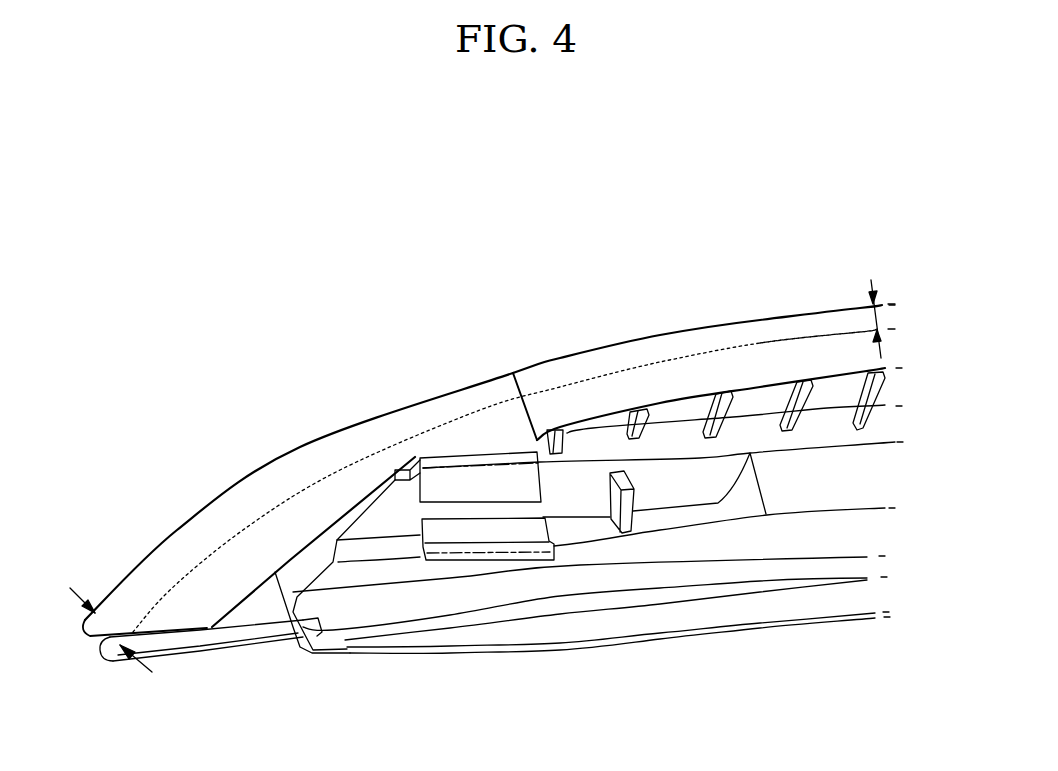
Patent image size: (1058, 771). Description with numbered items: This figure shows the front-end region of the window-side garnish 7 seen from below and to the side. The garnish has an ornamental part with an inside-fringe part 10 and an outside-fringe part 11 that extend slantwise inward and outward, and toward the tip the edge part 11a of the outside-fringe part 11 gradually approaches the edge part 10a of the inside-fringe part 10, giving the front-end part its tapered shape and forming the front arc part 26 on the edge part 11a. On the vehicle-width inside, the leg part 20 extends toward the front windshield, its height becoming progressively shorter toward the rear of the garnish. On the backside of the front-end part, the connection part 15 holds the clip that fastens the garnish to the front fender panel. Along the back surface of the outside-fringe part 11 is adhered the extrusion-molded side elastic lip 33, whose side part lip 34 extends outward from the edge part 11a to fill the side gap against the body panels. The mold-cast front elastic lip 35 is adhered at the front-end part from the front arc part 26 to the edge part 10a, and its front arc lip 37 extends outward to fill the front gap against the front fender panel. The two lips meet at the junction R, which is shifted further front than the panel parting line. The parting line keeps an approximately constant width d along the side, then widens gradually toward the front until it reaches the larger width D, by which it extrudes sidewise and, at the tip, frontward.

The window-side garnish 7 is at (870, 471).
The inside-fringe part 10 is at (270, 612).
The edge part of the inside-fringe part 10a is at (235, 646).
The outside-fringe part 11 is at (608, 414).
The edge part of the outside-fringe part 11a is at (621, 352).
The connection part 15 is at (503, 490).
The leg part 20 is at (613, 627).
The front arc part 26 is at (397, 440).
The side elastic lip 33 is at (778, 360).
The side part lip 34 is at (648, 350).
The front elastic lip 35 is at (180, 620).
The front arc lip 37 is at (177, 532).
The junction R is at (523, 374).
The width D is at (103, 623).
The width d is at (873, 313).